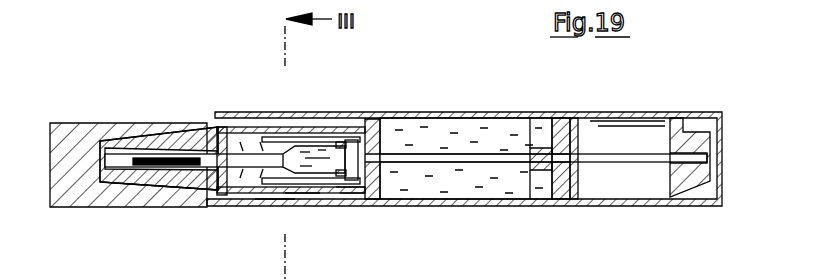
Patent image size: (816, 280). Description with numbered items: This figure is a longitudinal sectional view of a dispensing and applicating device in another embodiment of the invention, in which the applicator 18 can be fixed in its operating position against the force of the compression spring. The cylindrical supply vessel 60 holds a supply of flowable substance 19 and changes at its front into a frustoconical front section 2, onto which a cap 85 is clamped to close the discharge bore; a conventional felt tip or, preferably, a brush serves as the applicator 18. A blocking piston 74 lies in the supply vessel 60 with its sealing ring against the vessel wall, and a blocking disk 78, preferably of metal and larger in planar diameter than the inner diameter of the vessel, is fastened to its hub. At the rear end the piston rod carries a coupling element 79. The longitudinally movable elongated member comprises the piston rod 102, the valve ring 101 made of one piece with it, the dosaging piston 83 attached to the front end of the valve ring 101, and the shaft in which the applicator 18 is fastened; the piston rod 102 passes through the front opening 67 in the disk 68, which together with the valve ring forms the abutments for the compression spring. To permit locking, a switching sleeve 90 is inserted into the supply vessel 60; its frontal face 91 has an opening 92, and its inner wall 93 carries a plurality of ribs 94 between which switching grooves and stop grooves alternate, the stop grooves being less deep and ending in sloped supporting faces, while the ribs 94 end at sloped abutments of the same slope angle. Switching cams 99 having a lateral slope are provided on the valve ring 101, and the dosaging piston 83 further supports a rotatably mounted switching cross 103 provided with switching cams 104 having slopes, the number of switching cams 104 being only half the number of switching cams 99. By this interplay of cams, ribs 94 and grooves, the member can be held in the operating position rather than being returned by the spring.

The frustoconical front section 2 is at (162, 145).
The applicator 18 is at (150, 168).
The flowable substance 19 is at (468, 188).
The supply vessel 60 is at (337, 145).
The front opening 67 is at (210, 190).
The disk 68 is at (225, 200).
The blocking piston 74 is at (553, 118).
The blocking disk 78 is at (580, 125).
The coupling element 79 is at (698, 124).
The dosaging piston 83 is at (298, 205).
The cap 85 is at (83, 192).
The switching sleeve 90 is at (275, 203).
The frontal face 91 is at (367, 208).
The opening 92 is at (388, 125).
The inner wall 93 is at (240, 117).
The ribs 94 is at (280, 130).
The switching cams 99 is at (352, 208).
The valve ring 101 is at (368, 125).
The piston rod 102 is at (630, 162).
The switching cross 103 is at (343, 142).
The switching cams 104 is at (347, 195).